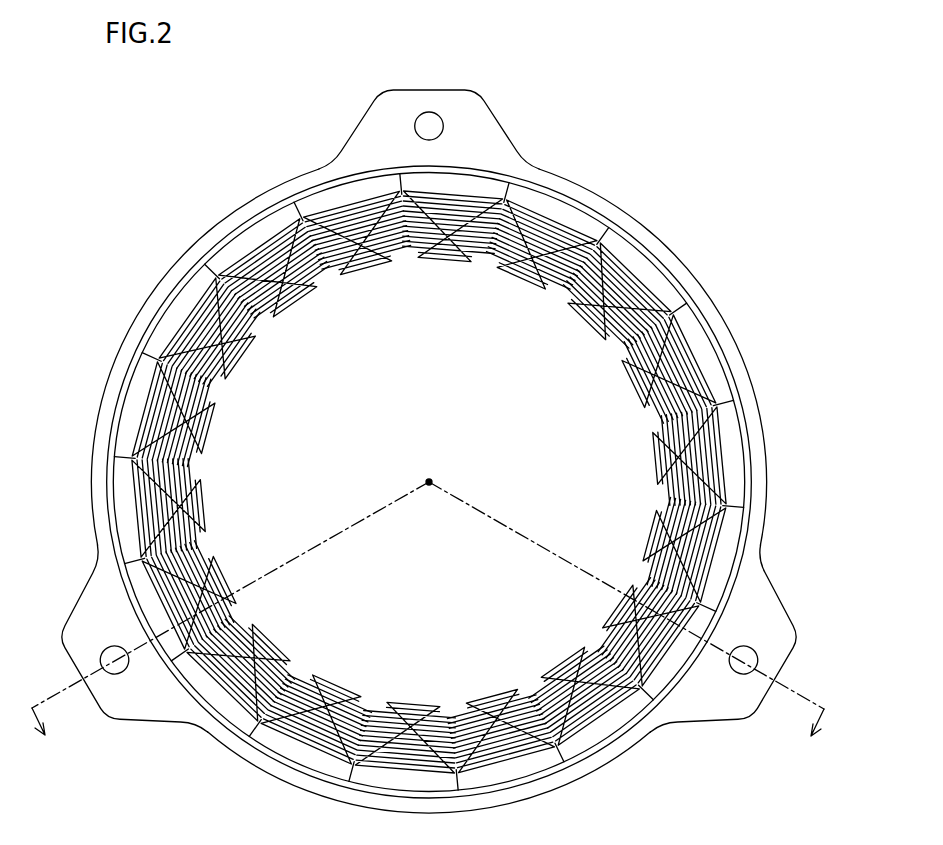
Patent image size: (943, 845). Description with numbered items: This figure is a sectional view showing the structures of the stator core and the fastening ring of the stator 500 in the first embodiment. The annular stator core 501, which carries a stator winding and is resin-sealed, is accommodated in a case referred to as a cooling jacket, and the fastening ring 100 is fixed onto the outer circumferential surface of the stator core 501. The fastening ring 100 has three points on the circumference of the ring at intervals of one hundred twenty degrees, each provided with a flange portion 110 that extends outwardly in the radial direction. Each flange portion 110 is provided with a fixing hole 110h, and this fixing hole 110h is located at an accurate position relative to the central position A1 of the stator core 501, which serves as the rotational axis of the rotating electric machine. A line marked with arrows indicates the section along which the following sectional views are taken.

The stator 500 is at (648, 204).
The fastening ring 100 is at (740, 372).
The stator core 501 is at (725, 443).
The flange portion 110 is at (452, 102).
The fixing hole 110h is at (428, 125).
The central position A1 is at (429, 482).